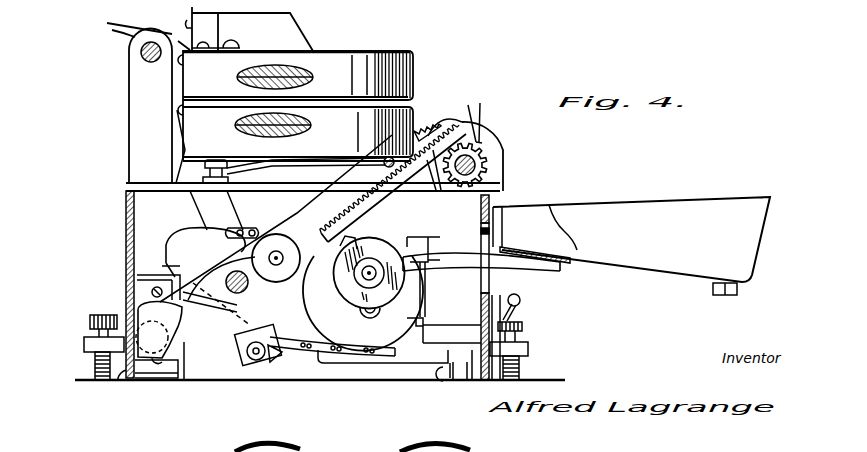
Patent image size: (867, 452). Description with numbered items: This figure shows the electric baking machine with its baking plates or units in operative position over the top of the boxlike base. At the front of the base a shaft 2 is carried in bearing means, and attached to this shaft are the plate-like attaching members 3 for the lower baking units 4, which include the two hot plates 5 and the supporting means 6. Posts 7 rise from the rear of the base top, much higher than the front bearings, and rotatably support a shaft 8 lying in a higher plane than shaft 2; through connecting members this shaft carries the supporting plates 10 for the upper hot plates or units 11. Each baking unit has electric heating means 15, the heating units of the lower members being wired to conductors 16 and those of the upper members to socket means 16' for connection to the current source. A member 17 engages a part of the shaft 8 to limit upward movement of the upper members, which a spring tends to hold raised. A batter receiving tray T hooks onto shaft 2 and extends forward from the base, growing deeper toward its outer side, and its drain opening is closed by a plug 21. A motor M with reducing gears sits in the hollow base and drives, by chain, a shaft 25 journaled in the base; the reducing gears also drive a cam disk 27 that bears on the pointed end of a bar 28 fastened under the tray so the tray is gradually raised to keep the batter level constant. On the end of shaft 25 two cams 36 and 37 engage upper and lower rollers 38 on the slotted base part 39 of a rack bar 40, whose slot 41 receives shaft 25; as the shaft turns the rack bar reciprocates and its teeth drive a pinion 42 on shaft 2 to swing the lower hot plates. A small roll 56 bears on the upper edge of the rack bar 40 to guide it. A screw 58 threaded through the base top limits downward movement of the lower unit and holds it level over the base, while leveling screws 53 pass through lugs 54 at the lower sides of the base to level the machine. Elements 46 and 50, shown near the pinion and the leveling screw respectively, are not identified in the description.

The shaft 2 is at (481, 143).
The plate-like attaching members 3 is at (128, 292).
The lower baking units 4 is at (210, 313).
The hot plates 5 is at (412, 123).
The supporting means 6 is at (333, 170).
The posts 7 is at (129, 145).
The shaft 8 is at (143, 60).
The supporting plates 10 is at (353, 56).
The upper hot plates 11 is at (391, 65).
The electric heating means 15 is at (300, 72).
The conductors 16 is at (393, 168).
The socket means 16' is at (257, 29).
The hand lever 17 is at (108, 27).
The plug 21 is at (717, 293).
The shaft 25 is at (236, 304).
The cam disk 27 is at (379, 242).
The bar 28 is at (547, 272).
The cam 36 is at (176, 337).
The cam 37 is at (176, 238).
The rollers 38 is at (276, 238).
The slotted base part 39 is at (312, 214).
The rack bar 40 is at (478, 117).
The slot 41 is at (185, 378).
The pinion 42 is at (488, 166).
The gear housing 46 is at (504, 143).
The handle 50 is at (521, 313).
The leveling screws 53 is at (95, 366).
The lugs 54 is at (84, 343).
The small roll 56 is at (383, 158).
The screw 58 is at (229, 168).
The motor M is at (417, 375).
The batter receiving tray T is at (647, 262).